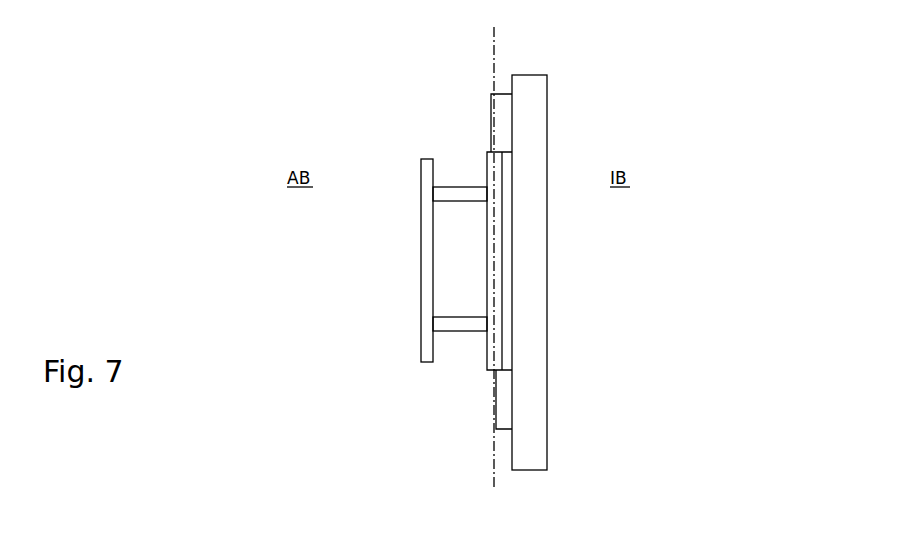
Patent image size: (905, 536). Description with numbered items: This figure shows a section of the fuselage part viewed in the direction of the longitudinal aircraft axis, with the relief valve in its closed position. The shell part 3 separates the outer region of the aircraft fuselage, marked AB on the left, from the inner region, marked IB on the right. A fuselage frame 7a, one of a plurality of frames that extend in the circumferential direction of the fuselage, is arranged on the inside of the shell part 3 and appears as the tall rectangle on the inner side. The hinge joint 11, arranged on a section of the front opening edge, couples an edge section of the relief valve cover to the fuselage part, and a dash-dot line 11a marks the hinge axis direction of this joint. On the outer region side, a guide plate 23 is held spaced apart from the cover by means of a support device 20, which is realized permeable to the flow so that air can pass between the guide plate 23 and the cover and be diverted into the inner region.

The support device 20 is at (430, 139).
The guide plate 23 is at (427, 173).
The hinge joint 11 is at (488, 163).
The shell part 3 is at (491, 112).
The axis 11a is at (495, 52).
The fuselage frame 7a is at (537, 380).